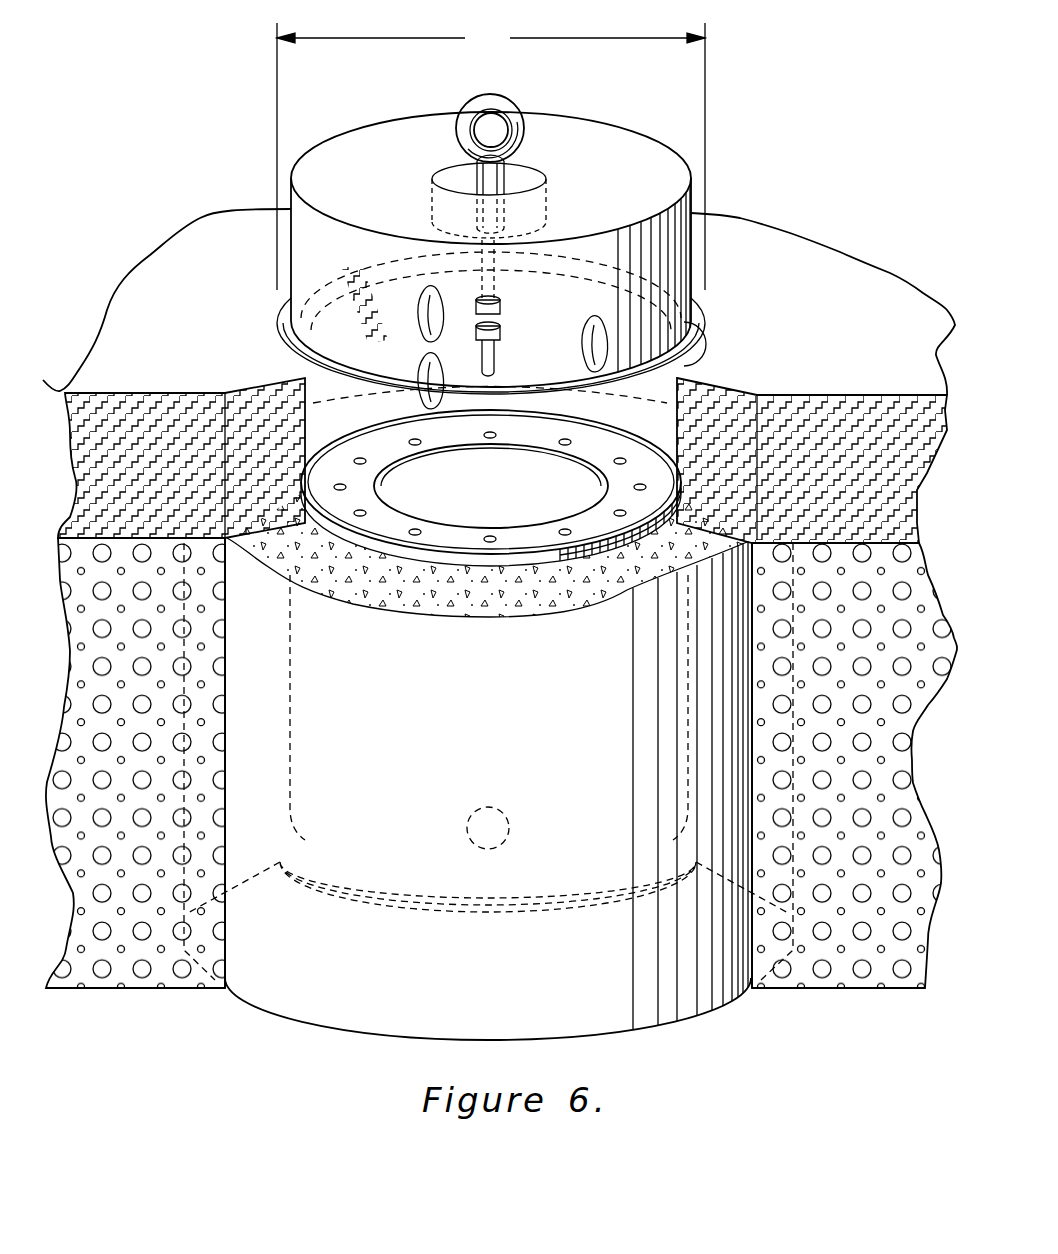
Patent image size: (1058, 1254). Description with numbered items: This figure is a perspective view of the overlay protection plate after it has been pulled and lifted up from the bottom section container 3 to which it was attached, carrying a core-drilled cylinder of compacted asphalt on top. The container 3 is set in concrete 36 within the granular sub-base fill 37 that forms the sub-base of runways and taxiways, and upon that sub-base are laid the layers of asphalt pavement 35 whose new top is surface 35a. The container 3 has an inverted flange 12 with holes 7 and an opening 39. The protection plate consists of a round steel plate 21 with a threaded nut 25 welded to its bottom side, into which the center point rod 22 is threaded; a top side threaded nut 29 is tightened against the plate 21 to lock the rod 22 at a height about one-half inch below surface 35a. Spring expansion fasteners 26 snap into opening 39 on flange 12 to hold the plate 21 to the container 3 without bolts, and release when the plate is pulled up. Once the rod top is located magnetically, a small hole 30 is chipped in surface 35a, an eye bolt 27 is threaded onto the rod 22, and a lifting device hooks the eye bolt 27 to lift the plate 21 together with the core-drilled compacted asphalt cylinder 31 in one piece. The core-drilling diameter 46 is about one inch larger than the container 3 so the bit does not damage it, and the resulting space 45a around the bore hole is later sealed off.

The bottom section container 3 is at (397, 895).
The holes 7 is at (412, 438).
The inverted flange 12 is at (530, 430).
The plate 21 is at (603, 380).
The center point rod 22 is at (503, 283).
The threaded nut 25 is at (503, 350).
The spring expansion fasteners 26 is at (430, 300).
The eye bolt 27 is at (500, 97).
The top side threaded nut 29 is at (504, 312).
The small hole 30 is at (530, 165).
The core-drilled compacted asphalt cylinder 31 is at (293, 317).
The asphalt pavement 35 is at (502, 460).
The surface of the new pavement 35a is at (807, 397).
The concrete 36 is at (405, 620).
The granular sub-base fill 37 is at (106, 990).
The opening 39 is at (488, 455).
The space 45a is at (703, 340).
The core-drilling diameter 46 is at (491, 156).